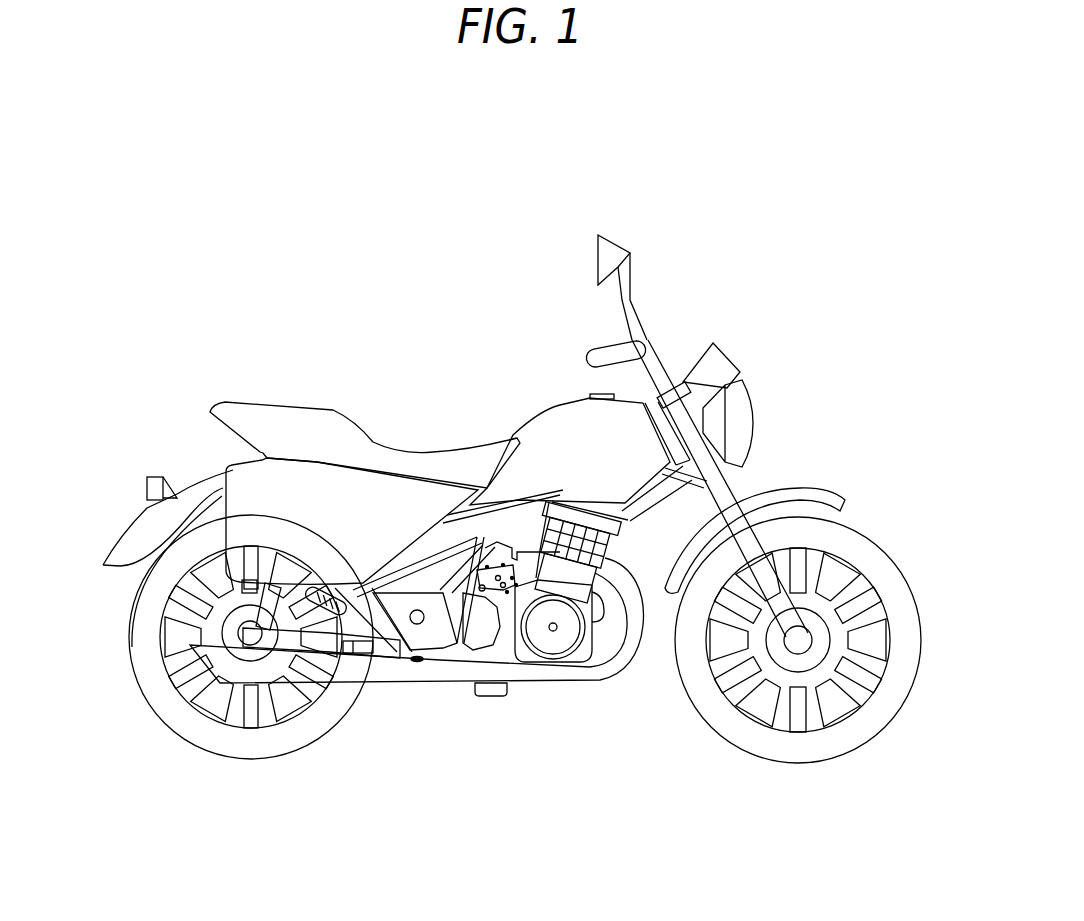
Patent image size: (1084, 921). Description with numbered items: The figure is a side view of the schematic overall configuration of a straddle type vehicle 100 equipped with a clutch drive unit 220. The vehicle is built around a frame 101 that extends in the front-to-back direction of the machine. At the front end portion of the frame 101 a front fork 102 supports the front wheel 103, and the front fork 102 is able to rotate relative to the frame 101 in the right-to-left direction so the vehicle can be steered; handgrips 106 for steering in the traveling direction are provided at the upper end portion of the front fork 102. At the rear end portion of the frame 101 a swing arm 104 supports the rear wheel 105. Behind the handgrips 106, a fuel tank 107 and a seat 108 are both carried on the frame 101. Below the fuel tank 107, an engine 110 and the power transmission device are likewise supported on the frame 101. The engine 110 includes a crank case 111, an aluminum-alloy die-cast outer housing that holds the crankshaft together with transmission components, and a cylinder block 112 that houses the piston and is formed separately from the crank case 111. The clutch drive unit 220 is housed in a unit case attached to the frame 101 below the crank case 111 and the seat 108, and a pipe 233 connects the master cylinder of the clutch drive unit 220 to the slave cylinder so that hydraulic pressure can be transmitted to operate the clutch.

The straddle type vehicle 100 is at (810, 274).
The frame 101 is at (670, 490).
The front fork 102 is at (747, 480).
The front wheel 103 is at (860, 532).
The swing arm 104 is at (302, 596).
The rear wheel 105 is at (133, 602).
The handgrips 106 is at (606, 343).
The fuel tank 107 is at (558, 405).
The seat 108 is at (423, 447).
The engine 110 is at (618, 553).
The crank case 111 is at (512, 643).
The cylinder block 112 is at (606, 506).
The clutch drive unit 220 is at (527, 542).
The pipe 233 is at (477, 570).